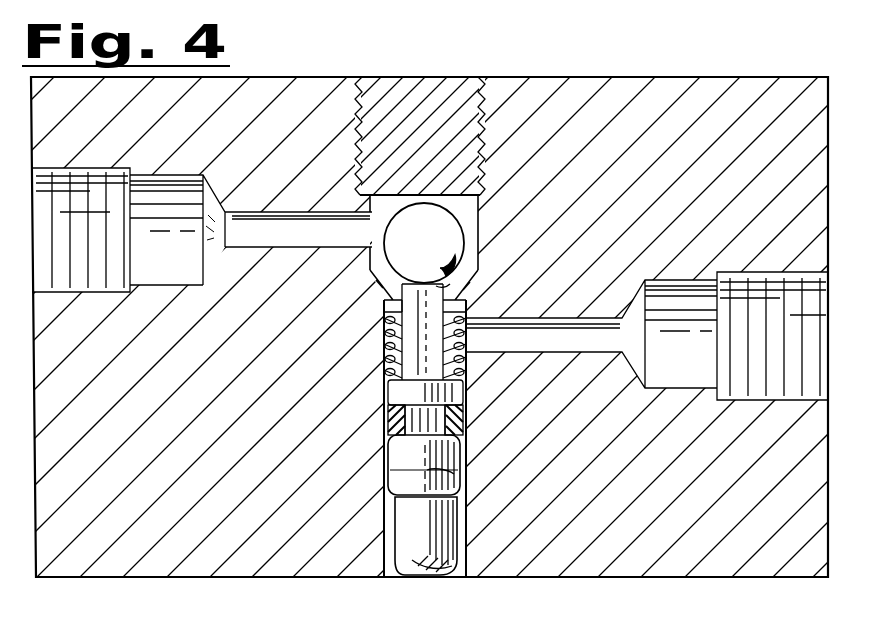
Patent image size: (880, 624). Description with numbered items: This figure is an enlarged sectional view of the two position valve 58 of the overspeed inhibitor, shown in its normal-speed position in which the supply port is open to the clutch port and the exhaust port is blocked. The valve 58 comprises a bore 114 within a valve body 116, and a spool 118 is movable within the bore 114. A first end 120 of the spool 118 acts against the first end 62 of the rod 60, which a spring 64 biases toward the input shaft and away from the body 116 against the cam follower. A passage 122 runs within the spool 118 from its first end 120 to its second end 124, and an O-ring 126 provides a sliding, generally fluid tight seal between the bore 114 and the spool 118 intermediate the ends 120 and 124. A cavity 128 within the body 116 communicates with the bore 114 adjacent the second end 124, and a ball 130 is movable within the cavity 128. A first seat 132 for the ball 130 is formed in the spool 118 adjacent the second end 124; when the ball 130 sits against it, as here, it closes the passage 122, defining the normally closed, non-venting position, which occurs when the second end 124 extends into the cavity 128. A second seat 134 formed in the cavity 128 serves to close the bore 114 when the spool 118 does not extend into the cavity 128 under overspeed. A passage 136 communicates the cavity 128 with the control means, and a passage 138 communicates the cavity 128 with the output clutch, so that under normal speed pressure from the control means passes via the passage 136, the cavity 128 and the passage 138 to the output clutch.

The two position valve 58 is at (400, 588).
The rod 60 is at (440, 572).
The first end of the rod 62 is at (427, 542).
The spring 64 is at (463, 373).
The bore 114 is at (467, 527).
The valve body 116 is at (657, 194).
The spool 118 is at (450, 458).
The first end of the spool 120 is at (402, 470).
The passage 122 is at (427, 473).
The second end of the spool 124 is at (402, 312).
The O-ring 126 is at (390, 420).
The cavity 128 is at (480, 236).
The ball 130 is at (445, 246).
The first seat 132 is at (446, 288).
The second seat 134 is at (378, 280).
The passage 136 is at (298, 244).
The passage 138 is at (572, 349).